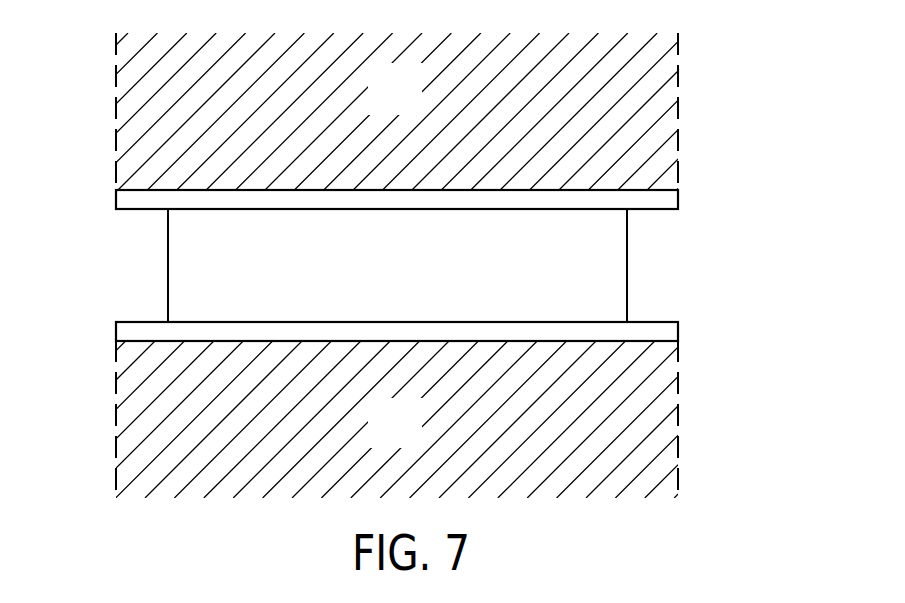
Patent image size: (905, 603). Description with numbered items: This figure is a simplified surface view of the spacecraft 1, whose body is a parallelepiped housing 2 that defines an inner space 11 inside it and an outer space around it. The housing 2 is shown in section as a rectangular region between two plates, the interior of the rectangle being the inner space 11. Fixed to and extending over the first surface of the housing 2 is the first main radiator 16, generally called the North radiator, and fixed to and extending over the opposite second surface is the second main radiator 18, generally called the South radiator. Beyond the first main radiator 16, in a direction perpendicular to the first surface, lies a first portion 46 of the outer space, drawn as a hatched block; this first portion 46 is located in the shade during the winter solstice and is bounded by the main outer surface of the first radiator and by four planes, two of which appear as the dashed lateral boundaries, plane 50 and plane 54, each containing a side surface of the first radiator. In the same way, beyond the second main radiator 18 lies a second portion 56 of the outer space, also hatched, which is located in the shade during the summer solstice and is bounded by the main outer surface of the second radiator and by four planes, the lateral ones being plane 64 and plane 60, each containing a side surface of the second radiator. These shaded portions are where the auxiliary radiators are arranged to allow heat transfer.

The spacecraft 1 is at (740, 283).
The housing 2 is at (628, 275).
The inner space 11 is at (413, 279).
The first main radiator 16 is at (253, 201).
The second main radiator 18 is at (547, 330).
The first portion 46 is at (413, 102).
The plane 50 is at (115, 112).
The plane 54 is at (680, 110).
The second portion 56 is at (413, 437).
The plane 60 is at (678, 448).
The plane 64 is at (115, 448).